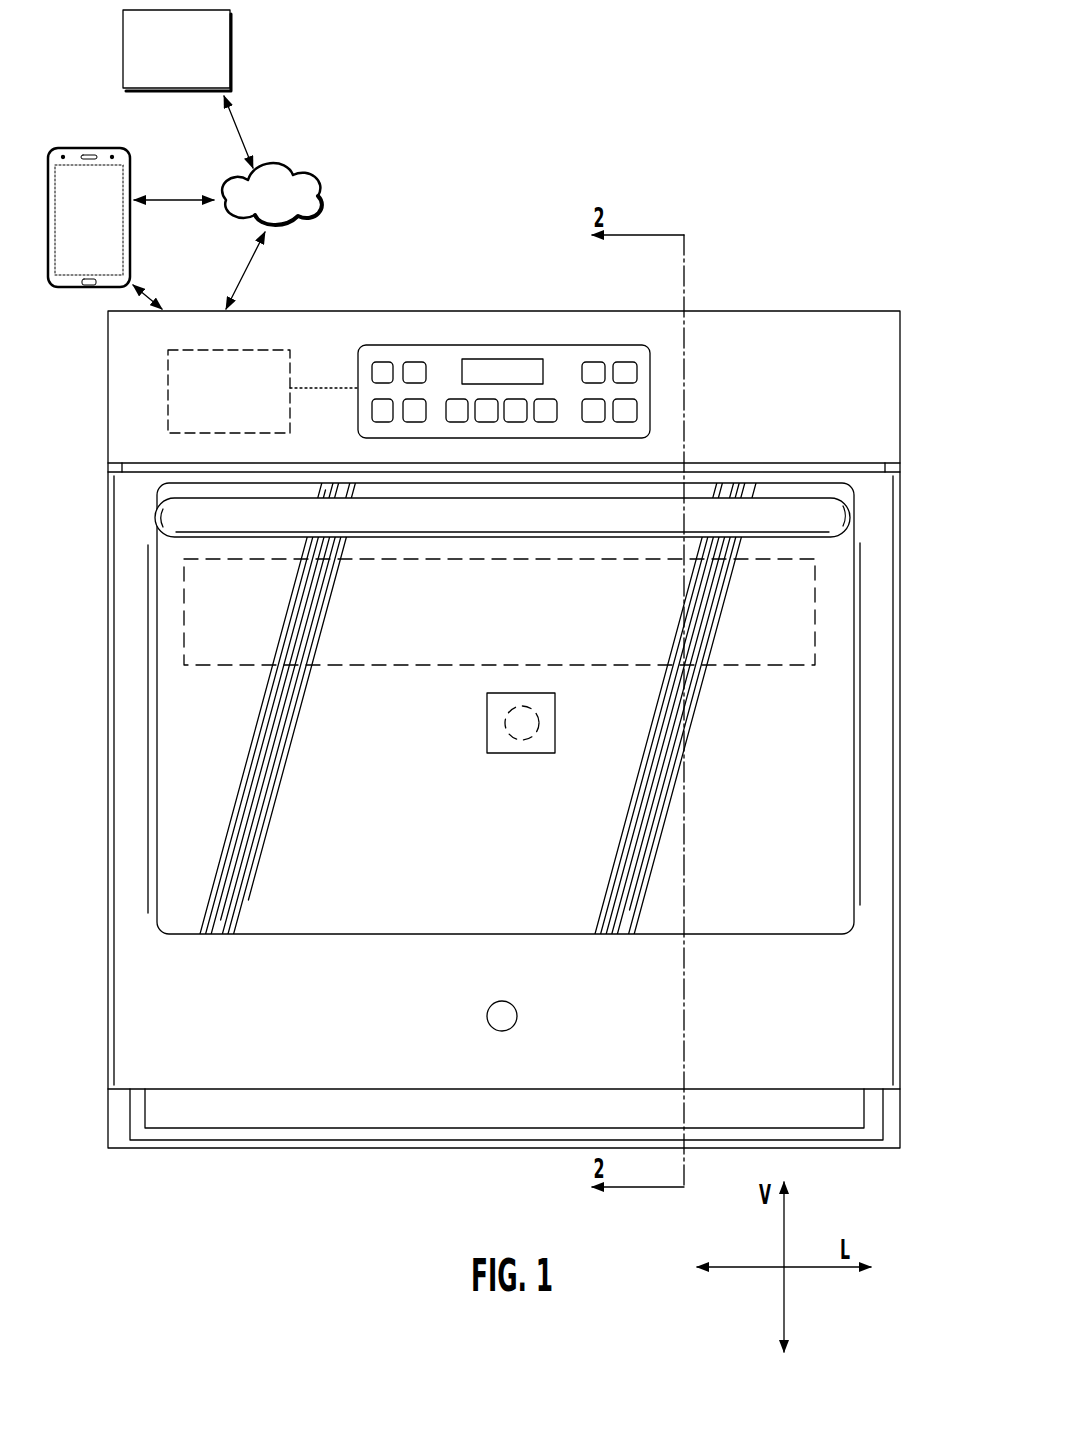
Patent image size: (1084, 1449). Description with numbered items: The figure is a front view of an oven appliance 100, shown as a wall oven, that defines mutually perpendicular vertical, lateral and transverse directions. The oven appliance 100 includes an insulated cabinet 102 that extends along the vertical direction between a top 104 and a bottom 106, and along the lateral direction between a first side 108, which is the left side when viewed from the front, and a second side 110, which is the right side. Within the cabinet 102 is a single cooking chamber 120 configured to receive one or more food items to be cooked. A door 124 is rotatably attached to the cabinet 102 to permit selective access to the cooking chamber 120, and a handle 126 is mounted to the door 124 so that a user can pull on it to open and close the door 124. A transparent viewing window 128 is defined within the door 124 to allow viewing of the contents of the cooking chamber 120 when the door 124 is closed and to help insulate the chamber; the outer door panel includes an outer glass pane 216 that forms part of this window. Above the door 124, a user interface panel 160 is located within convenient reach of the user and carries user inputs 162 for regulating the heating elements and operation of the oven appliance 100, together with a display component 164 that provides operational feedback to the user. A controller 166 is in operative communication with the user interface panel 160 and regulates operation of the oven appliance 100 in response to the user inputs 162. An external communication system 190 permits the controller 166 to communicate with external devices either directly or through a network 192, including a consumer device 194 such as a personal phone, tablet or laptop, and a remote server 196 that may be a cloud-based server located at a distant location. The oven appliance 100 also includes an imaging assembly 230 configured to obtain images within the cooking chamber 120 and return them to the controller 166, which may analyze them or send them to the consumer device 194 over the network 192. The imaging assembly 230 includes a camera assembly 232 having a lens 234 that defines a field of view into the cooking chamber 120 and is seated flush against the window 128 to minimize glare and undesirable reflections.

The oven appliance 100 is at (886, 214).
The cabinet 102 is at (893, 1112).
The top 104 is at (921, 313).
The bottom 106 is at (910, 1138).
The first side 108 is at (106, 602).
The second side 110 is at (904, 630).
The cooking chamber 120 is at (797, 732).
The door 124 is at (222, 1038).
The handle 126 is at (782, 520).
The transparent viewing window 128 is at (447, 818).
The user interface panel 160 is at (458, 343).
The user inputs 162 is at (414, 372).
The display component 164 is at (526, 359).
The controller 166 is at (168, 368).
The external communication system 190 is at (332, 158).
The network 192 is at (258, 209).
The consumer device 194 is at (72, 227).
The remote server 196 is at (161, 60).
The outer glass pane 216 is at (825, 838).
The imaging assembly 230 is at (476, 638).
The camera assembly 232 is at (476, 741).
The lens 234 is at (536, 706).